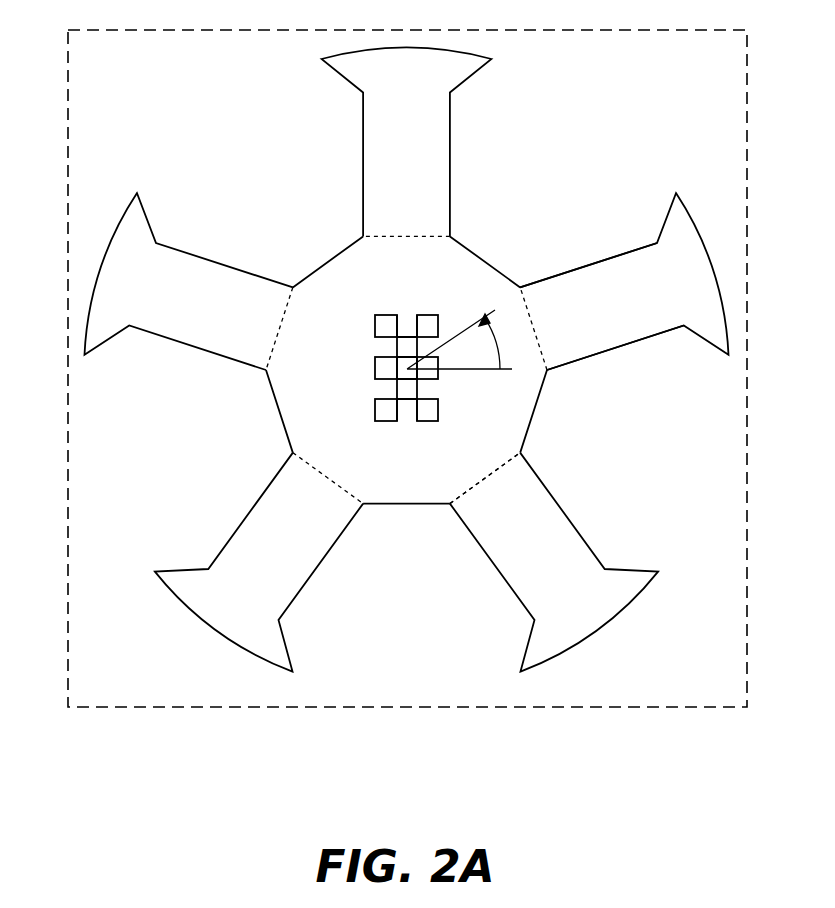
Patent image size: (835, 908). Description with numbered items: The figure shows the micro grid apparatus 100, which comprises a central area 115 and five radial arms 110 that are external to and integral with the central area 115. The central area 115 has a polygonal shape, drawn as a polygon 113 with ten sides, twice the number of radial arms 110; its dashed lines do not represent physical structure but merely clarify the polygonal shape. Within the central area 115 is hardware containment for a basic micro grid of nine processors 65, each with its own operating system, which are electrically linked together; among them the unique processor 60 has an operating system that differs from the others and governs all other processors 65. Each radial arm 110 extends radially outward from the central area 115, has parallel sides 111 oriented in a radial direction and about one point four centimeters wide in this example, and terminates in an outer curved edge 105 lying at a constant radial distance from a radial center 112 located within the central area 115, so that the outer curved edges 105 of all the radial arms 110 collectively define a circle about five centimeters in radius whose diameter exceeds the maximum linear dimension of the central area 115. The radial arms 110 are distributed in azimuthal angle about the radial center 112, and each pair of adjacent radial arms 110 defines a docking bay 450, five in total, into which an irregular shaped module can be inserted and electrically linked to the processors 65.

The micro grid apparatus 100 is at (98, 240).
The outer curved edge 105 is at (692, 238).
The radial arm 110 is at (624, 281).
The parallel sides 111 is at (597, 262).
The radial center 112 is at (407, 369).
The polygon 113 is at (492, 472).
The central area 115 is at (406, 369).
The docking bay 450 is at (434, 142).
The unique processor 60 is at (428, 321).
The processors 65 is at (367, 305).